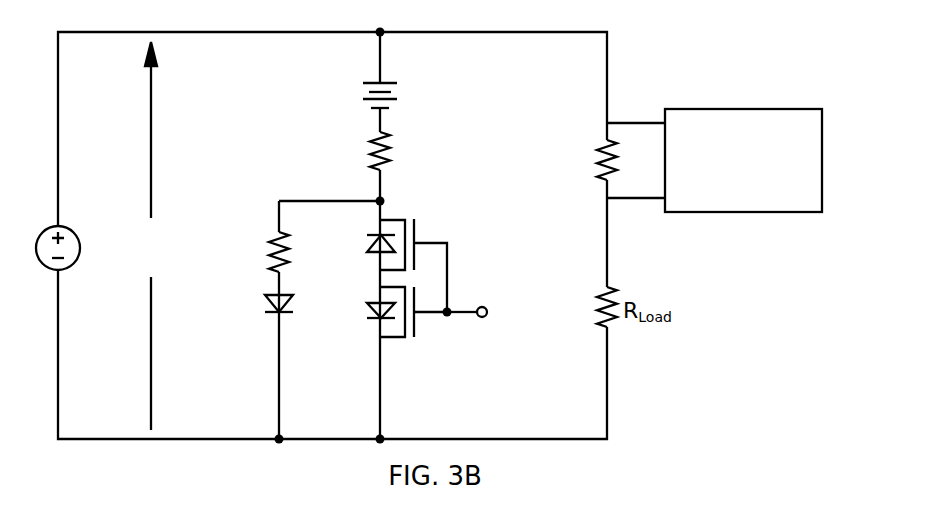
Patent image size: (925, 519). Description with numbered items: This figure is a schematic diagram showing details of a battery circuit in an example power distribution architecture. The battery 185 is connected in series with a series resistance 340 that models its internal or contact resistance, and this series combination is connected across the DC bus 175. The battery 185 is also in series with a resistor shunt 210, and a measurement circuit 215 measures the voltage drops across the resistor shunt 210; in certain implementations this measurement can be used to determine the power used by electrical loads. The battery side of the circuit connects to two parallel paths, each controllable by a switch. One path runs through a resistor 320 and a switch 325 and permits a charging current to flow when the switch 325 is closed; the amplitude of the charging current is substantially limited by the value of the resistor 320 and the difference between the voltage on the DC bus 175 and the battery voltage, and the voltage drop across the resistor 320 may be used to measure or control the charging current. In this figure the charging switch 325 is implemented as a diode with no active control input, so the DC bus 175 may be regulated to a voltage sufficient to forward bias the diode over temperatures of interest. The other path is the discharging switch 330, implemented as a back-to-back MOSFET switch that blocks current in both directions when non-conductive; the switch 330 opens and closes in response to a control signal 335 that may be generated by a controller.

The DC bus 175 is at (151, 163).
The battery 185 is at (397, 83).
The resistor shunt 210 is at (603, 150).
The measurement circuit 215 is at (743, 160).
The resistor 320 is at (279, 238).
The switch 325 is at (265, 296).
The switch 330 is at (420, 243).
The control signal 335 is at (481, 306).
The series resistance 340 is at (390, 147).